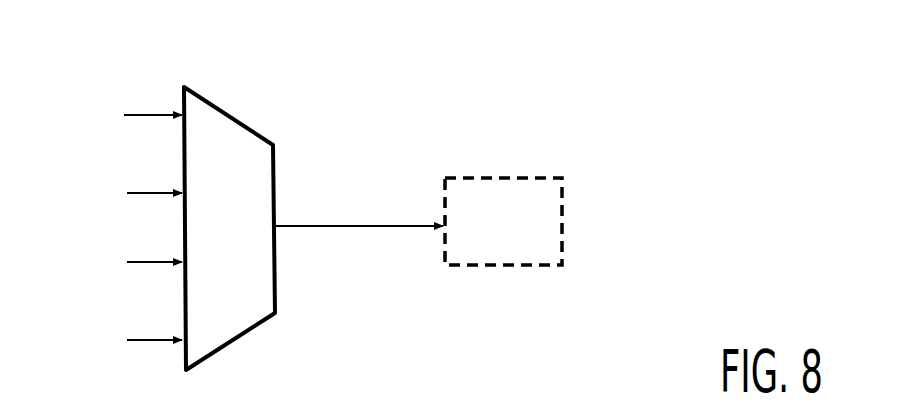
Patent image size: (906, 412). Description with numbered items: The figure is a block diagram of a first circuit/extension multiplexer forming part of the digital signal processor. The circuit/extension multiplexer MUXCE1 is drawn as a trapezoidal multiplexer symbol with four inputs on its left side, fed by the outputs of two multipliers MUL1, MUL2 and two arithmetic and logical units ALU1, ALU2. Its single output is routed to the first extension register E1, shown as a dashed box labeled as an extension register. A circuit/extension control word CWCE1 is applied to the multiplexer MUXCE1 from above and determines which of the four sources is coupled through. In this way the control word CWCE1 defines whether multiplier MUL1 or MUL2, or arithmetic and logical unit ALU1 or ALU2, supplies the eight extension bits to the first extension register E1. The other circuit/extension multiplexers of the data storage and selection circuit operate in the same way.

The circuit/extension multiplexer MUXCE1 is at (247, 141).
The circuit/extension control word CWCE1 is at (215, 100).
The first extension register E1 is at (492, 203).
The multiplier MUL1 is at (117, 111).
The multiplier MUL2 is at (117, 190).
The arithmetic and logical unit ALU1 is at (119, 260).
The arithmetic and logical unit ALU2 is at (120, 338).